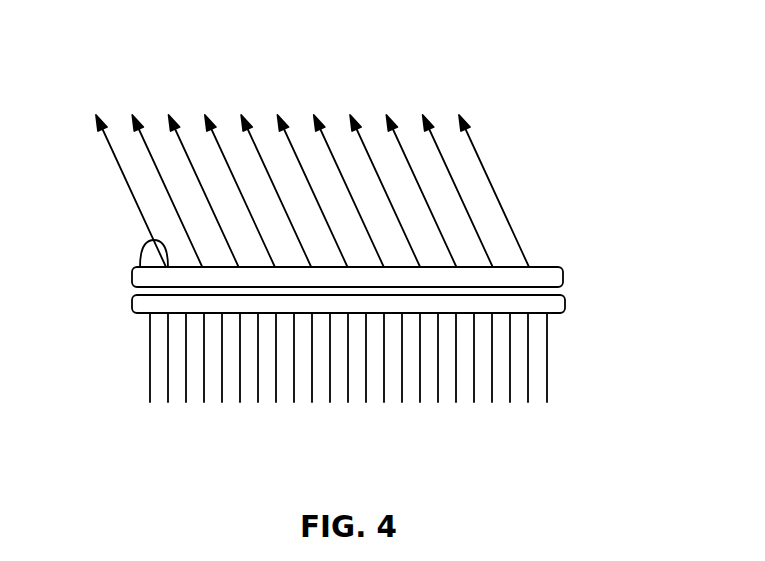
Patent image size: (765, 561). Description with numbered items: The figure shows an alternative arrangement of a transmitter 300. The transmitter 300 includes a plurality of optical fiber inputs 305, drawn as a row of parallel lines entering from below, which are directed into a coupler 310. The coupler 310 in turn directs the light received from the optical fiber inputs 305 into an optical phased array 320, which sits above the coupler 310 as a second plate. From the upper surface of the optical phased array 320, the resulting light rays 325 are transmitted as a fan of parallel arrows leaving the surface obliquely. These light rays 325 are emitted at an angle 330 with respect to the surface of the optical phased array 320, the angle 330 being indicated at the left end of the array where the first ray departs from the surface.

The transmitter 300 is at (645, 92).
The optical fiber inputs 305 is at (560, 403).
The coupler 310 is at (132, 305).
The optical phased array 320 is at (565, 277).
The light rays 325 is at (500, 110).
The angle 330 is at (145, 255).